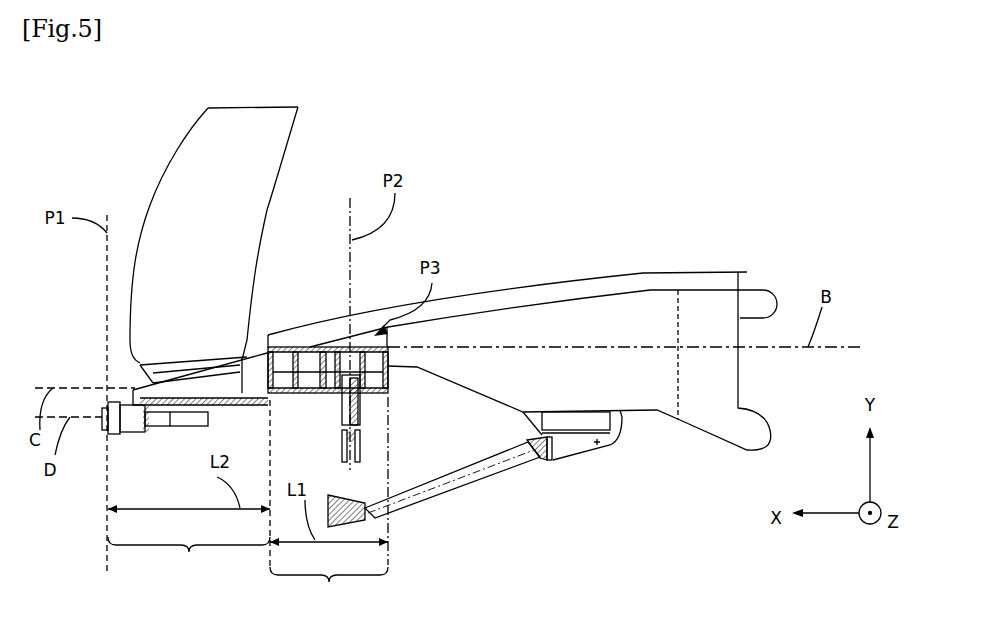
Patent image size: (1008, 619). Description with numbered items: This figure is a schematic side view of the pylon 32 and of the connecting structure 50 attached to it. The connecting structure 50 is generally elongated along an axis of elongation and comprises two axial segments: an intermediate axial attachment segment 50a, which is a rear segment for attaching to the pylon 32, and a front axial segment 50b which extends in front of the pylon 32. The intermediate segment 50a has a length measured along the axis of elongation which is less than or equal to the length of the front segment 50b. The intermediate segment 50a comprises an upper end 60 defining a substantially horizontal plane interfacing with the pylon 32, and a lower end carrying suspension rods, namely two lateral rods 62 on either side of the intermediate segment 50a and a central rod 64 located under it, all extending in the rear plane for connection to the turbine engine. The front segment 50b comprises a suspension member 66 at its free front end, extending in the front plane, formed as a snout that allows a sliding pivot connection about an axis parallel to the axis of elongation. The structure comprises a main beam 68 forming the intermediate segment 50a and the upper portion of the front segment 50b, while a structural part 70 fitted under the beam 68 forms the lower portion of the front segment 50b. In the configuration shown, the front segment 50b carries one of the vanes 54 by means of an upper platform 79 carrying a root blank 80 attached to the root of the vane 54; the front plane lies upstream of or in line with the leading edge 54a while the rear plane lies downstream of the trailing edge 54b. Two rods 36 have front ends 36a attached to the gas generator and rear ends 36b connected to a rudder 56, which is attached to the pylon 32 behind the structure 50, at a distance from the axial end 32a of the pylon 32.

The pylon 32 is at (470, 359).
The axial end 32a is at (270, 337).
The rods 36 is at (446, 509).
The front ends 36a is at (392, 513).
The rear ends 36b is at (537, 461).
The connecting structure 50 is at (245, 420).
The intermediate axial attachment segment 50a is at (329, 576).
The front axial segment 50b is at (189, 545).
The vane 54 is at (232, 235).
The leading edges 54a is at (182, 145).
The trailing edges 54b is at (262, 247).
The rudder 56 is at (597, 444).
The upper end 60 is at (362, 322).
The lateral rods 62 is at (360, 436).
The central rod 64 is at (367, 415).
The suspension member 66 is at (98, 440).
The main beam 68 is at (315, 385).
The structural part 70 is at (153, 420).
The upper platform 79 is at (143, 370).
The root blank 80 is at (173, 350).